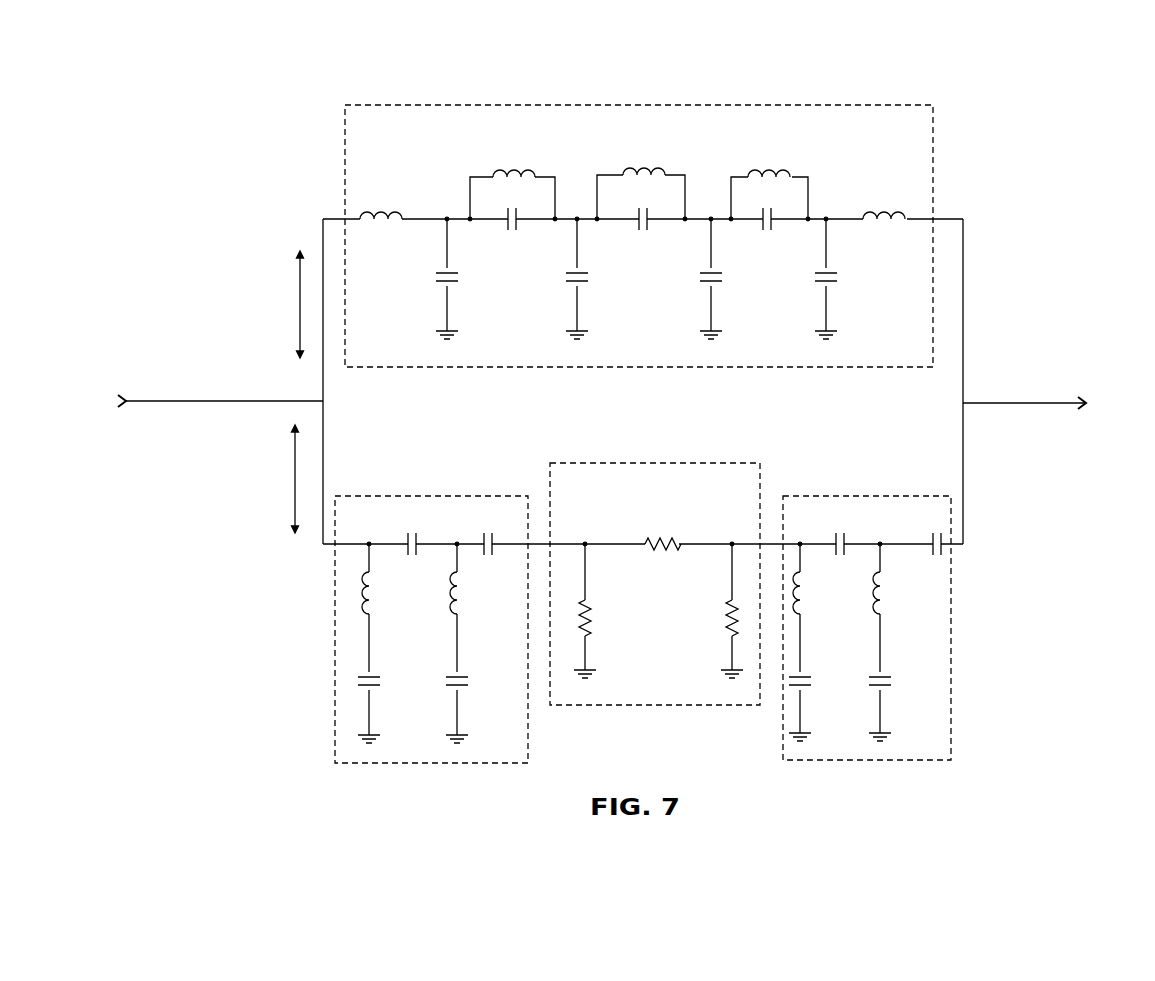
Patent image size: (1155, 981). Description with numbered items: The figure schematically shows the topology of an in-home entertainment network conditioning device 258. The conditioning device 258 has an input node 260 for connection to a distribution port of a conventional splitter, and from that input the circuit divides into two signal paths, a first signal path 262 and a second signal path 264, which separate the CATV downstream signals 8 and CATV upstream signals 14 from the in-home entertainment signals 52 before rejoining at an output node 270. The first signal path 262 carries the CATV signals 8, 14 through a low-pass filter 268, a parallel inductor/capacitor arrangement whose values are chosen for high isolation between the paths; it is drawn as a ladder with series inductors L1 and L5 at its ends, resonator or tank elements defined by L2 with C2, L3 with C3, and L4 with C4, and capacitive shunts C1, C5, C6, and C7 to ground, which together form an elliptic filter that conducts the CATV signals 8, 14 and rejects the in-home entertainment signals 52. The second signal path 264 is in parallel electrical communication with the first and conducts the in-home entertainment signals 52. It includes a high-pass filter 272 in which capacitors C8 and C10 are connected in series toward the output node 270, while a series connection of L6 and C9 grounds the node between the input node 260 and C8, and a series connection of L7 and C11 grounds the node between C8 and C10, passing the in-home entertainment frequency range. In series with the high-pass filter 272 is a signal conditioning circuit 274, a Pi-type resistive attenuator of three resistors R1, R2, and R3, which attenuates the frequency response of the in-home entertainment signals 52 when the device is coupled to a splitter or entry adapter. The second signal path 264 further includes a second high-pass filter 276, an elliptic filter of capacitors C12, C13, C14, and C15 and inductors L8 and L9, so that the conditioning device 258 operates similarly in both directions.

The conditioning device 258 is at (649, 188).
The input node 260 is at (193, 402).
The first signal path 262 is at (601, 361).
The second signal path 264 is at (642, 381).
The low-pass filter 268 is at (639, 206).
The output node 270 is at (1047, 404).
The high-pass filter 272 is at (392, 649).
The signal conditioning circuit 274 is at (655, 552).
The second high-pass filter 276 is at (910, 631).
The CATV downstream signals 8 is at (275, 304).
The CATV upstream signals 14 is at (275, 304).
The in-home entertainment signals 52 is at (274, 479).
The inductor L1 is at (381, 196).
The inductor L2 is at (512, 179).
The inductor L3 is at (641, 177).
The inductor L4 is at (769, 178).
The inductor L5 is at (884, 198).
The inductor L6 is at (385, 607).
The inductor L7 is at (478, 607).
The inductor L8 is at (816, 607).
The inductor L9 is at (898, 607).
The capacitor C1 is at (430, 278).
The capacitor C2 is at (511, 235).
The capacitor C3 is at (642, 235).
The capacitor C4 is at (766, 235).
The capacitor C5 is at (559, 278).
The capacitor C6 is at (691, 278).
The capacitor C7 is at (844, 278).
The capacitor C8 is at (416, 528).
The capacitor C9 is at (386, 702).
The capacitor C10 is at (486, 528).
The capacitor C11 is at (481, 702).
The capacitor C12 is at (825, 705).
The capacitor C13 is at (833, 528).
The capacitor C14 is at (906, 705).
The capacitor C15 is at (919, 528).
The resistor R1 is at (663, 526).
The resistor R2 is at (605, 610).
The resistor R3 is at (713, 610).